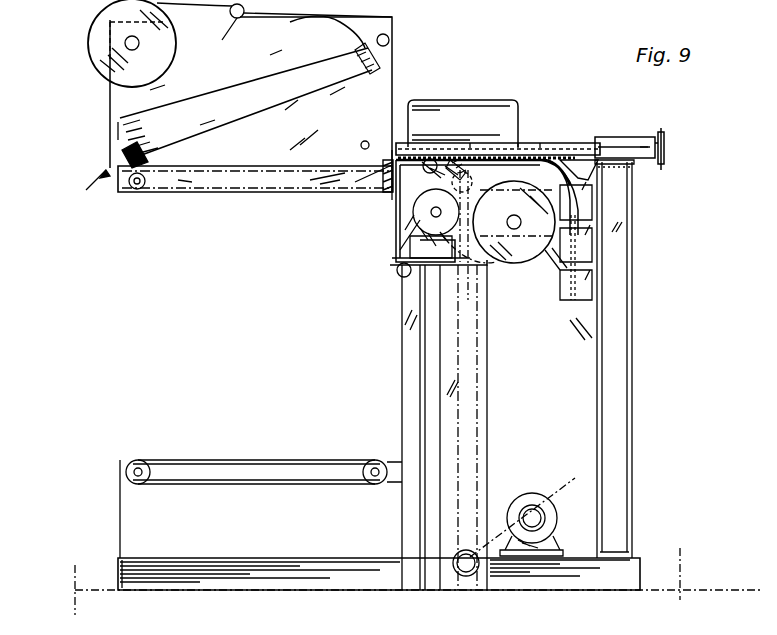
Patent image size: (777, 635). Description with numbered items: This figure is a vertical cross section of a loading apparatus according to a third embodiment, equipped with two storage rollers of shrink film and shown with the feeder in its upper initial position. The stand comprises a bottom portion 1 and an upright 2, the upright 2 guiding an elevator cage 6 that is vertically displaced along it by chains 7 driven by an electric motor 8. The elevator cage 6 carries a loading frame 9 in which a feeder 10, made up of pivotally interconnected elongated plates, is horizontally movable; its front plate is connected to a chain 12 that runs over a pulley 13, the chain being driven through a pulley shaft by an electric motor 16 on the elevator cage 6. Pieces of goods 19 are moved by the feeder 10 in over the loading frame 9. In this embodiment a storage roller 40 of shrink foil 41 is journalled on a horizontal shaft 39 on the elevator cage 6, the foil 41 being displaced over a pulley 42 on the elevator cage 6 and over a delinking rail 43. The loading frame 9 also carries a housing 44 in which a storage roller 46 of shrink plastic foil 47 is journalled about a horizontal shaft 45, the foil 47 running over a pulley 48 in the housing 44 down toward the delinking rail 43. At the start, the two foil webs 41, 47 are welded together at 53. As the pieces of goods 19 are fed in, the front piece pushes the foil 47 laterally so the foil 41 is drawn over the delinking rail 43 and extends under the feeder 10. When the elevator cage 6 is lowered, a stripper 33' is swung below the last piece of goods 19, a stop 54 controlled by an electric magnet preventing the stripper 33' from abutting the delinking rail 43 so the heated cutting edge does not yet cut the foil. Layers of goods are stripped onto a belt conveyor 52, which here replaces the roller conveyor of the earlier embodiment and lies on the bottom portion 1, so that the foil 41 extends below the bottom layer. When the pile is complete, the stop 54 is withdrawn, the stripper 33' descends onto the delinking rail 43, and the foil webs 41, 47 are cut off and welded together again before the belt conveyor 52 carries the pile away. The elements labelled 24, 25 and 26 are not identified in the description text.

The bottom portion 1 is at (257, 580).
The upright 2 is at (632, 325).
The elevator cage 6 is at (396, 205).
The chains 7 is at (463, 432).
The electric motor 8 is at (519, 517).
The loading frame 9 is at (88, 188).
The feeder 10 is at (532, 130).
The chain 12 is at (202, 196).
The pulley 13 is at (130, 192).
The electric motor 16 is at (398, 257).
The pieces of goods 19 is at (445, 118).
The bracket 24 is at (560, 148).
The cylinder 25 is at (612, 148).
The handwheel 26 is at (662, 128).
The stripper 33' is at (321, 45).
The horizontal shaft 39 is at (520, 228).
The storage roller 40 is at (494, 255).
The shrink foil 41 is at (448, 272).
The pulley 42 is at (396, 272).
The delinking rail 43 is at (383, 164).
The housing 44 is at (128, 104).
The horizontal shaft 45 is at (125, 43).
The storage roller 46 is at (104, 24).
The shrink plastic foil 47 is at (274, 31).
The pulley 48 is at (392, 38).
The belt conveyor 52 is at (198, 458).
The weld 53 is at (388, 158).
The stop 54 is at (361, 143).